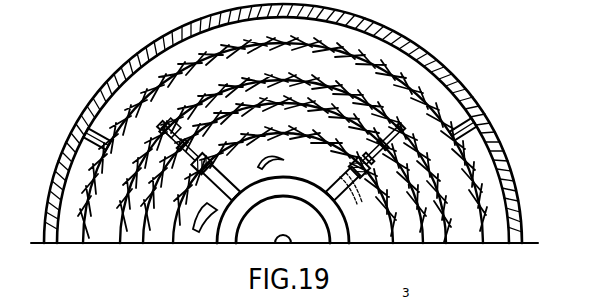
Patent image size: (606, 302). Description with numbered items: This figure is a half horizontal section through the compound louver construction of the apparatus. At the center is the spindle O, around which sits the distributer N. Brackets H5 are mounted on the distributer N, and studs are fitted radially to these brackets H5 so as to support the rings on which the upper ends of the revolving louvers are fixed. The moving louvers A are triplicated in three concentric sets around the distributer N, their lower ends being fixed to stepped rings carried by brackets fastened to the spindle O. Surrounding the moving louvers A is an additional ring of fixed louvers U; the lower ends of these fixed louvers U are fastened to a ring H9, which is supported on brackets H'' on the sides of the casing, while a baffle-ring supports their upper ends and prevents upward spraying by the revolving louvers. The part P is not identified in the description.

The ring H9 is at (403, 34).
The brackets H'' is at (302, 114).
The fixed louvers U is at (210, 52).
The moving louvers A is at (333, 98).
The distributer N is at (283, 210).
The spindle O is at (287, 237).
The vanes P is at (276, 163).
The brackets H5 is at (281, 166).